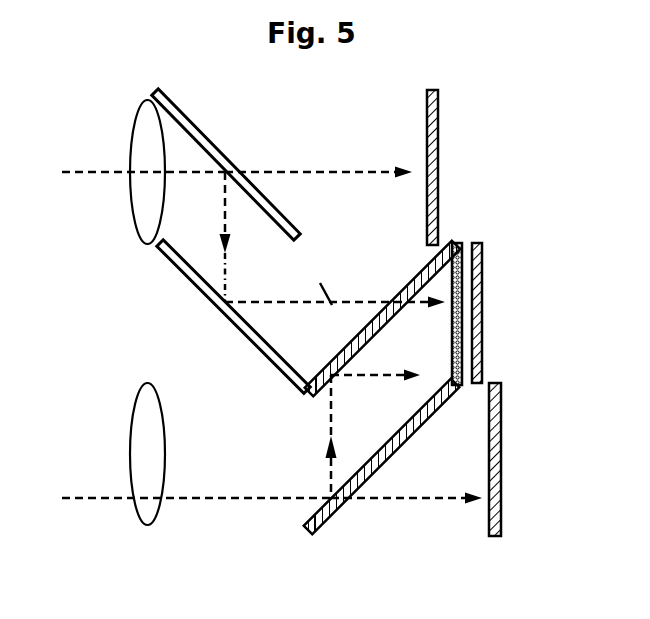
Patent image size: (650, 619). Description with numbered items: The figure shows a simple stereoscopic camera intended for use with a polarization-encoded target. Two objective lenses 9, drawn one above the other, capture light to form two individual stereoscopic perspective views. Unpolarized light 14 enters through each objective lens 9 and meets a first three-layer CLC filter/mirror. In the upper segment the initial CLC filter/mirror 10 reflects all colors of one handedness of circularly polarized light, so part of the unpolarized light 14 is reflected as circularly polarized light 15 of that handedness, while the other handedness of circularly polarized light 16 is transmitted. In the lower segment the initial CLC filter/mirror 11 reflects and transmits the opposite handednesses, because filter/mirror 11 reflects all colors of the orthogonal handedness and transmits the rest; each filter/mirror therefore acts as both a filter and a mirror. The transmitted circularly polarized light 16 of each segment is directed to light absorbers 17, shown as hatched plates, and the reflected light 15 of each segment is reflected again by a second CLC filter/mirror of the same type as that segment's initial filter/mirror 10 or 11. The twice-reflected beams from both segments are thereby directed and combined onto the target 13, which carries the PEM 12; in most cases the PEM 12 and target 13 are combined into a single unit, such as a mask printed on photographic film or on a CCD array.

The objective lenses 9 is at (140, 390).
The CLC filter/mirror 10 is at (205, 135).
The CLC filter/mirror 11 is at (400, 256).
The PEM 12 is at (458, 248).
The target 13 is at (480, 347).
The unpolarized light 14 is at (83, 170).
The reflected circularly polarized light 15 is at (226, 277).
The transmitted circularly polarized light 16 is at (270, 171).
The light absorbers 17 is at (438, 145).